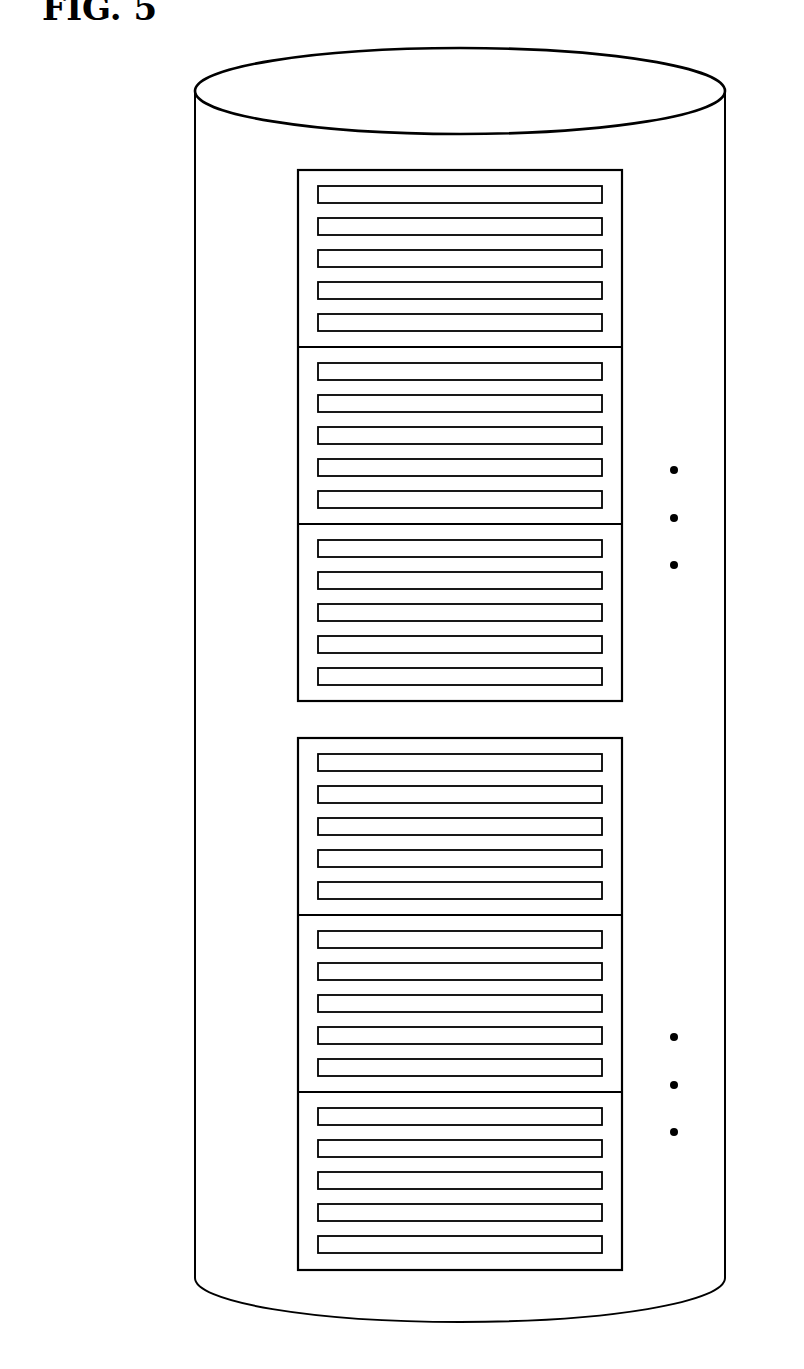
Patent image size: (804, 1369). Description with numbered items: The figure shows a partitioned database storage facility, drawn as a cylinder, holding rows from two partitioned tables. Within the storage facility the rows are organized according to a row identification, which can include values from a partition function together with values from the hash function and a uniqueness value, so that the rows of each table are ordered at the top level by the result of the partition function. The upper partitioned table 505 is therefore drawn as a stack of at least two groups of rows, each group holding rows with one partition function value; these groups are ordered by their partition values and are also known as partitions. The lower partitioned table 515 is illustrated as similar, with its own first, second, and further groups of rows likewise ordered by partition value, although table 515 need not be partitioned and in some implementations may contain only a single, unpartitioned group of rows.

The partitioned table 505 is at (469, 435).
The partitioned table 515 is at (470, 1004).